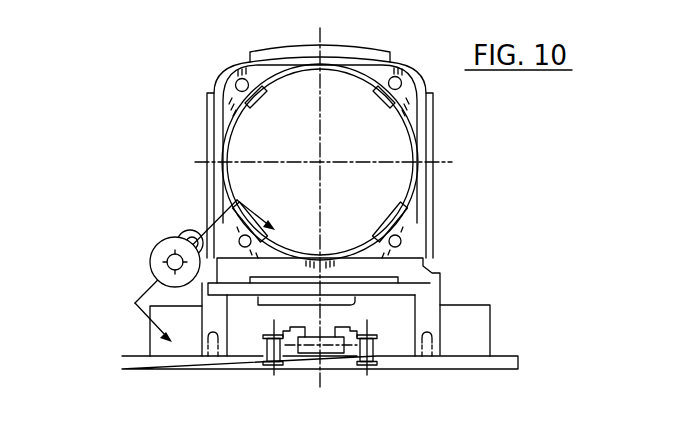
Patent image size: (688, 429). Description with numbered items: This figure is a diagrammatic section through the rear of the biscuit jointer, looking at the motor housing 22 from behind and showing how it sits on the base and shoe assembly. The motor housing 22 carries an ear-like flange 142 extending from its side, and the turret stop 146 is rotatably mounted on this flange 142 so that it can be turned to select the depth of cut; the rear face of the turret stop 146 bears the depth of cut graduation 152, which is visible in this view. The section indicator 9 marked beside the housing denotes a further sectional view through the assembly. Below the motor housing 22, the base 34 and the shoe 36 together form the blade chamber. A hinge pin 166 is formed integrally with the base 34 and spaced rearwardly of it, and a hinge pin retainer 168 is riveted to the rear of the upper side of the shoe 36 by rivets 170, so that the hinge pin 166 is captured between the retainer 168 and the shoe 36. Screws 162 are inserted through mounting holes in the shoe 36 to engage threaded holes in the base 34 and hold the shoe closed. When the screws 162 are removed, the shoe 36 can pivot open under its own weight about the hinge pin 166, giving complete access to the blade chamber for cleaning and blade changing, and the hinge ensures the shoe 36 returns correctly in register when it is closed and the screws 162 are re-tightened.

The motor housing 22 is at (208, 94).
The ear-like flange 142 is at (194, 231).
The turret stop 146 is at (149, 233).
The depth of cut graduation 152 is at (151, 256).
The section line 9- 9 is at (209, 271).
The hinge pin retainer 168 is at (352, 328).
The base 34 is at (475, 305).
The screws 162 is at (205, 346).
The shoe 36 is at (513, 352).
The rivets 170 is at (267, 350).
The hinge pin 166 is at (312, 354).